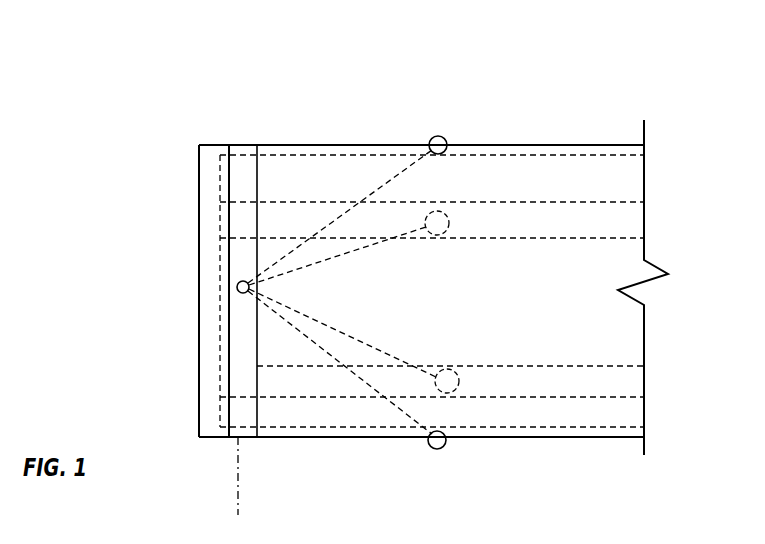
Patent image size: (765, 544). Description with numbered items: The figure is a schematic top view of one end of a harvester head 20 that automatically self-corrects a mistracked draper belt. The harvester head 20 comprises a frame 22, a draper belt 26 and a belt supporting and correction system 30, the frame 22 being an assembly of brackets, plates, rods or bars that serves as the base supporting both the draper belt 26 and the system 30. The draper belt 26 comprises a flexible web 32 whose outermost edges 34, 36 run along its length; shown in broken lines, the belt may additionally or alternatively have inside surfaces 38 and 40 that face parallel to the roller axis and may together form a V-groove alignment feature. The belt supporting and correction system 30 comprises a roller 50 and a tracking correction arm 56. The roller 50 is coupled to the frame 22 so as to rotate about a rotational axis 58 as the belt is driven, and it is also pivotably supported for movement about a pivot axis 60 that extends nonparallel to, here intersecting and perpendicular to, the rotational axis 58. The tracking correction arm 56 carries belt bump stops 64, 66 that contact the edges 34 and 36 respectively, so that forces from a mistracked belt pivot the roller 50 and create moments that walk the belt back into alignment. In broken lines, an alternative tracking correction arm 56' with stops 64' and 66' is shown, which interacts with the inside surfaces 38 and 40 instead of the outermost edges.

The harvester head 20 is at (176, 143).
The frame 22 is at (210, 145).
The belt supporting and correction system 30 is at (248, 145).
The draper belt 26 is at (555, 157).
The outermost edge 34 is at (487, 432).
The web 32 is at (598, 158).
The outermost edge 36 is at (495, 158).
The surface 40 is at (625, 202).
The surface 38 is at (620, 238).
The pivot axis 60 is at (239, 282).
The tracking correction arm 56 is at (340, 176).
The tracking correction arm 56' is at (353, 359).
The belt bump stop 66 is at (429, 81).
The belt bump stop 66' is at (481, 222).
The belt bump stop 64 is at (409, 470).
The belt bump stop 64' is at (494, 383).
The roller 50 is at (237, 440).
The rotational axis 58 is at (238, 482).